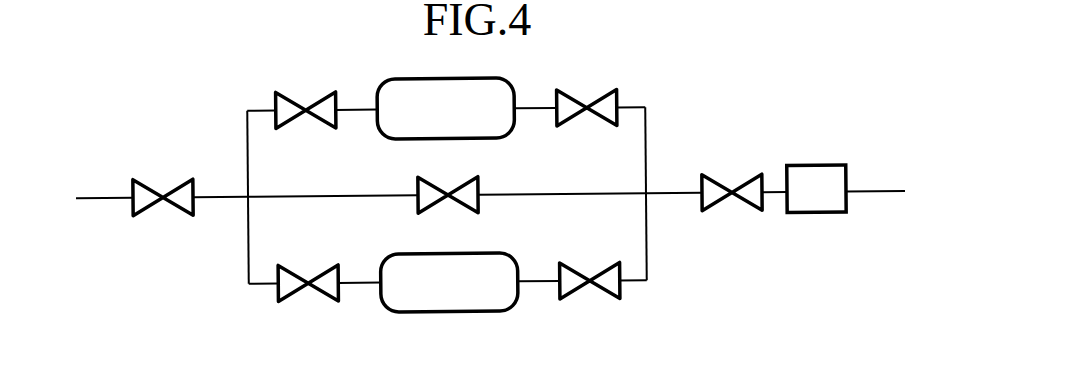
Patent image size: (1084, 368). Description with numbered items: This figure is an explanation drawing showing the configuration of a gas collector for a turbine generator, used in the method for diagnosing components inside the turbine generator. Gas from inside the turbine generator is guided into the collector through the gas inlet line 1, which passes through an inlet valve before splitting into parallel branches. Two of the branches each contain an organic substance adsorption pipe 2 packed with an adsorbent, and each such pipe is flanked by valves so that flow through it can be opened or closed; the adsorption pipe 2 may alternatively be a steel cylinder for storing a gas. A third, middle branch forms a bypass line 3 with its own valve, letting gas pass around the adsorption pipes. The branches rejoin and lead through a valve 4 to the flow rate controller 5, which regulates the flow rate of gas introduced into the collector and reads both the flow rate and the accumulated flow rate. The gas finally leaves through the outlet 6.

The gas inlet line 1 is at (108, 200).
The organic substance adsorption pipe 2 is at (449, 312).
The bypass line 3 is at (620, 194).
The valve 4 is at (723, 183).
The flow rate controller 5 is at (826, 216).
The outlet 6 is at (880, 193).